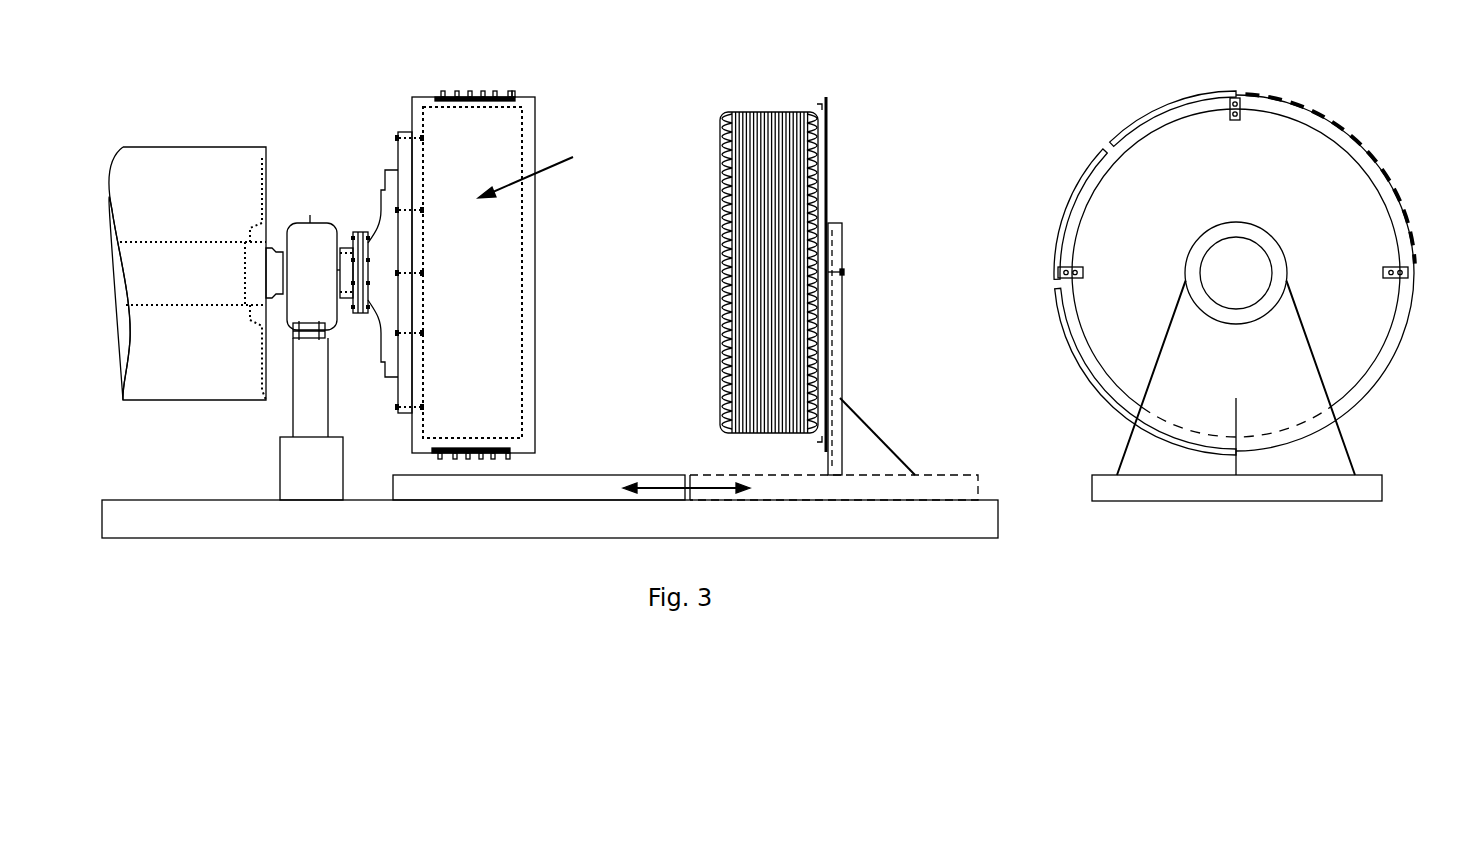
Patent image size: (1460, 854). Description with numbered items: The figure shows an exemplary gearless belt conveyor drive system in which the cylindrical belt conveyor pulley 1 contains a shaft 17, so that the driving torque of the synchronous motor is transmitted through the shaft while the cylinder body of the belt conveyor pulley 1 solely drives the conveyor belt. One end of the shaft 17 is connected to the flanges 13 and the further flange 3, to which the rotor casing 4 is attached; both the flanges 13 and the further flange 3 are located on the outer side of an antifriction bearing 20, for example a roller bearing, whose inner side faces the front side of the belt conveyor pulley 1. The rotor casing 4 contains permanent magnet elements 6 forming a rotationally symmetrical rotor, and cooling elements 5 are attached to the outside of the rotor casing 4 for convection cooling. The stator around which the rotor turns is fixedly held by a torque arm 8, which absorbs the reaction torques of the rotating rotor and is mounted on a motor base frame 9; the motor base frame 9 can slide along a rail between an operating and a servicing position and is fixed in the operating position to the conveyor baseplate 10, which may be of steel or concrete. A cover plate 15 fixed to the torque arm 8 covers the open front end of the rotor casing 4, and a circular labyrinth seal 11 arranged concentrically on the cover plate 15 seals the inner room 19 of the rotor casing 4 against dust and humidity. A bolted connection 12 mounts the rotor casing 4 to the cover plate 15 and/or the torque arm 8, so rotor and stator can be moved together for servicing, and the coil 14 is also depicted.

The belt conveyor pulley 1 is at (188, 145).
The further flange 3 is at (400, 130).
The rotor casing 4 is at (418, 95).
The cooling elements 5 is at (493, 92).
The permanent magnet elements 6 is at (512, 93).
The torque arm 8 is at (840, 400).
The motor base frame 9 is at (632, 474).
The conveyor baseplate 10 is at (172, 500).
The labyrinth seal 11 is at (1165, 122).
The bolted connection 12 is at (1237, 95).
The flanges 13 is at (360, 233).
The coil 14 is at (755, 112).
The cover plate 15 is at (828, 150).
The shaft 17 is at (160, 240).
The inner room 19 is at (538, 170).
The antifriction bearing 20 is at (300, 223).